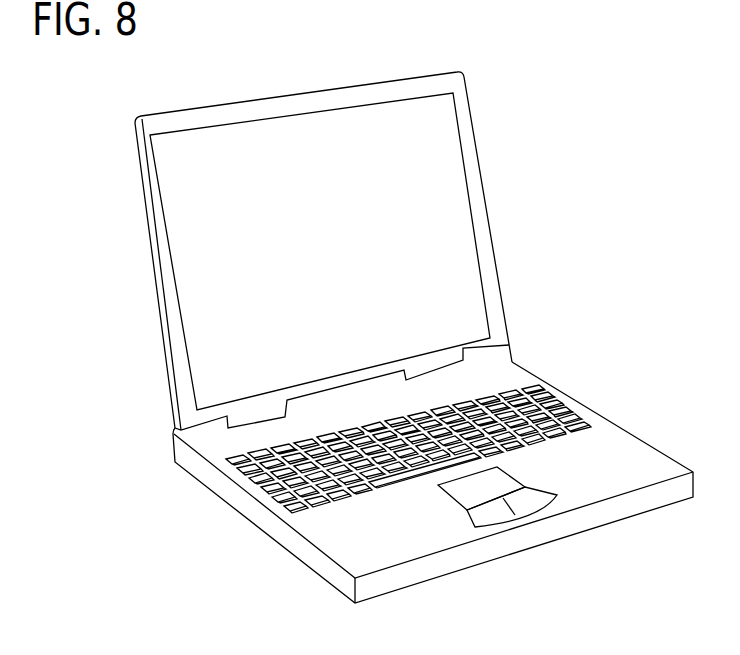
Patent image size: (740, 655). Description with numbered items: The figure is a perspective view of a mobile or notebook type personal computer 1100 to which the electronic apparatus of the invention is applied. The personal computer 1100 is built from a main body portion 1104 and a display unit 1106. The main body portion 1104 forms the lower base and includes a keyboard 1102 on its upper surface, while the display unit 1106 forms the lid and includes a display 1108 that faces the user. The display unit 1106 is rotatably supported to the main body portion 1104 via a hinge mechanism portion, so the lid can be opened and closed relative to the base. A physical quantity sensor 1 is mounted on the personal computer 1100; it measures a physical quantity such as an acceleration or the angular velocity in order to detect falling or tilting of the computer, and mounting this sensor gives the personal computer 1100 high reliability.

The personal computer 1100 is at (414, 316).
The display unit 1106 is at (361, 236).
The display 1108 is at (308, 152).
The keyboard 1102 is at (545, 395).
The main body portion 1104 is at (433, 476).
The physical quantity sensor 1 is at (630, 460).